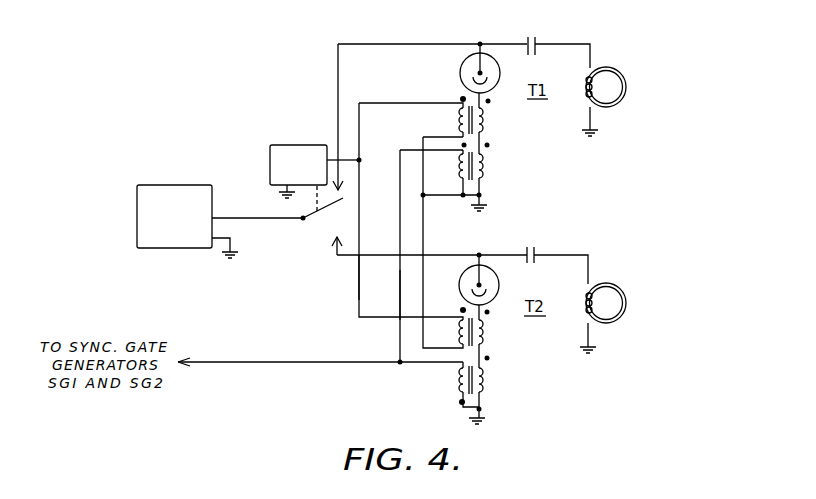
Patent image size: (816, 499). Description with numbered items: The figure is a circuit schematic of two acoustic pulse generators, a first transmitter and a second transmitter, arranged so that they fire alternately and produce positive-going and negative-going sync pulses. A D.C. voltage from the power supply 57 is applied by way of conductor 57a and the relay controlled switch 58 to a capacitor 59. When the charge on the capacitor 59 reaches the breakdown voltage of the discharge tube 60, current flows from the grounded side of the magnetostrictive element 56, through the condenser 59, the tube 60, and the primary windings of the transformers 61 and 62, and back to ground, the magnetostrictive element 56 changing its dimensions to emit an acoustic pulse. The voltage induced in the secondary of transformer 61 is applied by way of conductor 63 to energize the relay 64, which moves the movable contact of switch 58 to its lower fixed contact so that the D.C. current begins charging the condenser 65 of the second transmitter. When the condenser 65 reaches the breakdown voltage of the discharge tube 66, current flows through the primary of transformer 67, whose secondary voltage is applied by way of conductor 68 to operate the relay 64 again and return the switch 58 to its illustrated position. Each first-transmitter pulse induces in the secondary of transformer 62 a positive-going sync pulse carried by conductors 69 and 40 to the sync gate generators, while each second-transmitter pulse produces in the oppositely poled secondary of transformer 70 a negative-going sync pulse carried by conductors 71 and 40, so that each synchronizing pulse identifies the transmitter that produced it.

The conductor 40 is at (272, 362).
The magnetostrictive element 56 is at (612, 74).
The power supply 57 is at (160, 187).
The conductor 57a is at (229, 218).
The relay controlled switch 58 is at (322, 210).
The capacitor 59 is at (537, 38).
The discharge tube 60 is at (461, 73).
The transformer 61 is at (486, 123).
The transformer 62 is at (486, 170).
The conductor 63 is at (400, 103).
The relay 64 is at (285, 145).
The condenser 65 is at (533, 249).
The discharge tube 66 is at (499, 284).
The transformer 67 is at (486, 338).
The conductor 68 is at (357, 275).
The conductor 69 is at (399, 287).
The transformer 70 is at (486, 385).
The conductor 71 is at (432, 364).